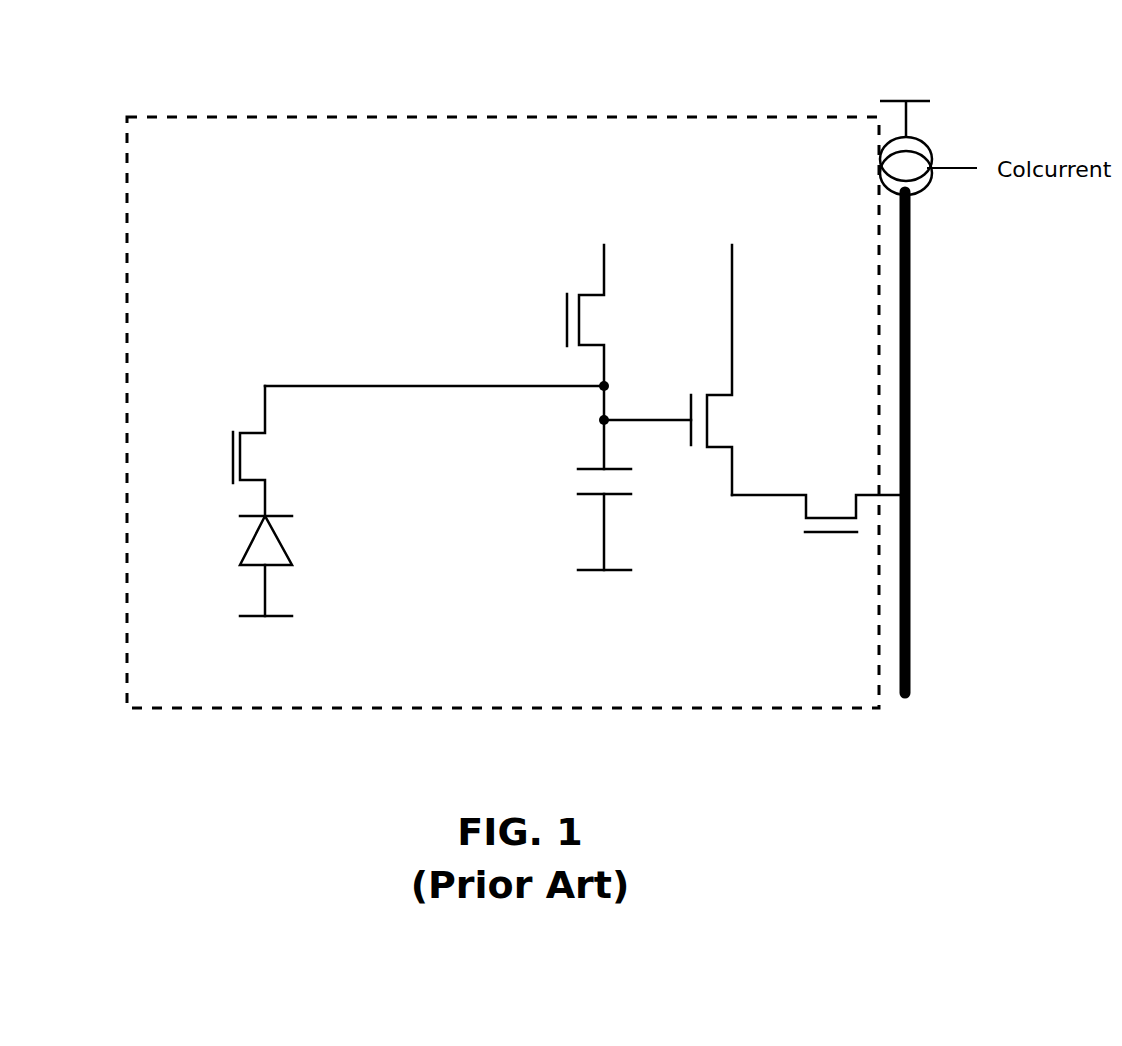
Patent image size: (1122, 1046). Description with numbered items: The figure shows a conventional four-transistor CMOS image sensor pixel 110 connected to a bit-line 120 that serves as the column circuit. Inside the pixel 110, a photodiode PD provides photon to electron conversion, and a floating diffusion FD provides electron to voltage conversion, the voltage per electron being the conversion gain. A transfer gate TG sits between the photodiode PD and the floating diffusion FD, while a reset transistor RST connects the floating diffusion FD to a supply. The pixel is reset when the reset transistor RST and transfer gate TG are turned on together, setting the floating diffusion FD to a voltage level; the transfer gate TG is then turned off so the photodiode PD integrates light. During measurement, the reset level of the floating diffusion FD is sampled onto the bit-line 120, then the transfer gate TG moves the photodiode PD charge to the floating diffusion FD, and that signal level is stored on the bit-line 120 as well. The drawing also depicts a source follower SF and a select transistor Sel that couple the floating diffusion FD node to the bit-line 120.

The 4T pixel 110 is at (388, 117).
The bit-line 120 is at (911, 418).
The transfer gate TG is at (233, 457).
The reset transistor RST is at (567, 320).
The source follower SF is at (693, 370).
The select Sel is at (831, 532).
The floating diffusion FD is at (578, 519).
The photodiode PD is at (289, 566).